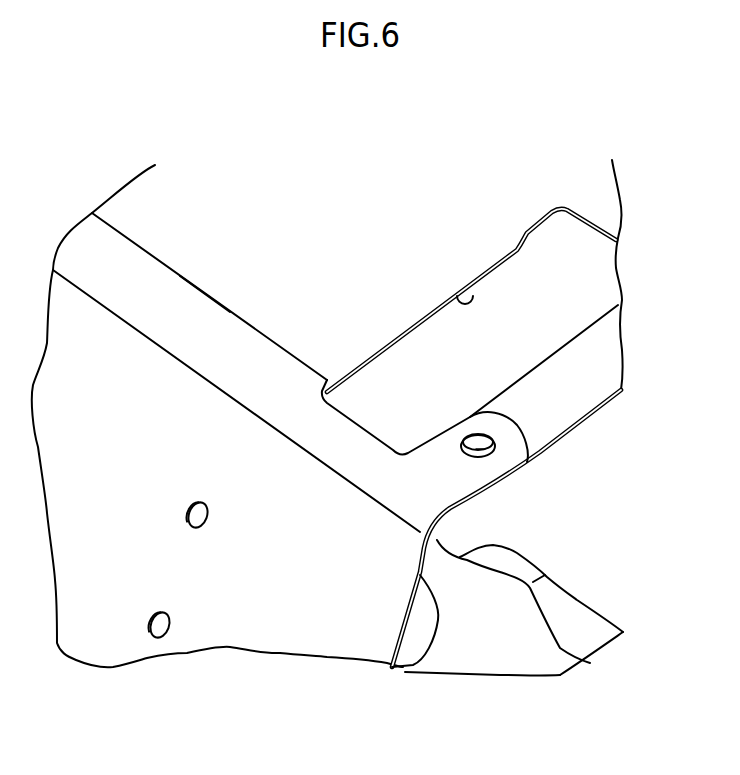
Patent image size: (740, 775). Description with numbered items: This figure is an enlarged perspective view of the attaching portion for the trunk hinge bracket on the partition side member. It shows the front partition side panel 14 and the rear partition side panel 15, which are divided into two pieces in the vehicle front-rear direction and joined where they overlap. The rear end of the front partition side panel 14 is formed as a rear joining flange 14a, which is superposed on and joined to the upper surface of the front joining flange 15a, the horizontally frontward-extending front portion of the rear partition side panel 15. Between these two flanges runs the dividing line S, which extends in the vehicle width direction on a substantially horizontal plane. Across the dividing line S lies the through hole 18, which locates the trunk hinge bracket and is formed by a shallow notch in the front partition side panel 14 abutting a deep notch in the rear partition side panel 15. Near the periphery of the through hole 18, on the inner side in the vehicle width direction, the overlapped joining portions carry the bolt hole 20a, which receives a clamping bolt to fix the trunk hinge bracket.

The front partition side panel 14 is at (323, 638).
The rear joining flange 14a is at (247, 340).
The dividing line S is at (198, 287).
The rear partition side panel 15 is at (322, 192).
The front joining flange 15a is at (572, 393).
The through hole 18 is at (472, 285).
The bolt hole 20a is at (495, 450).